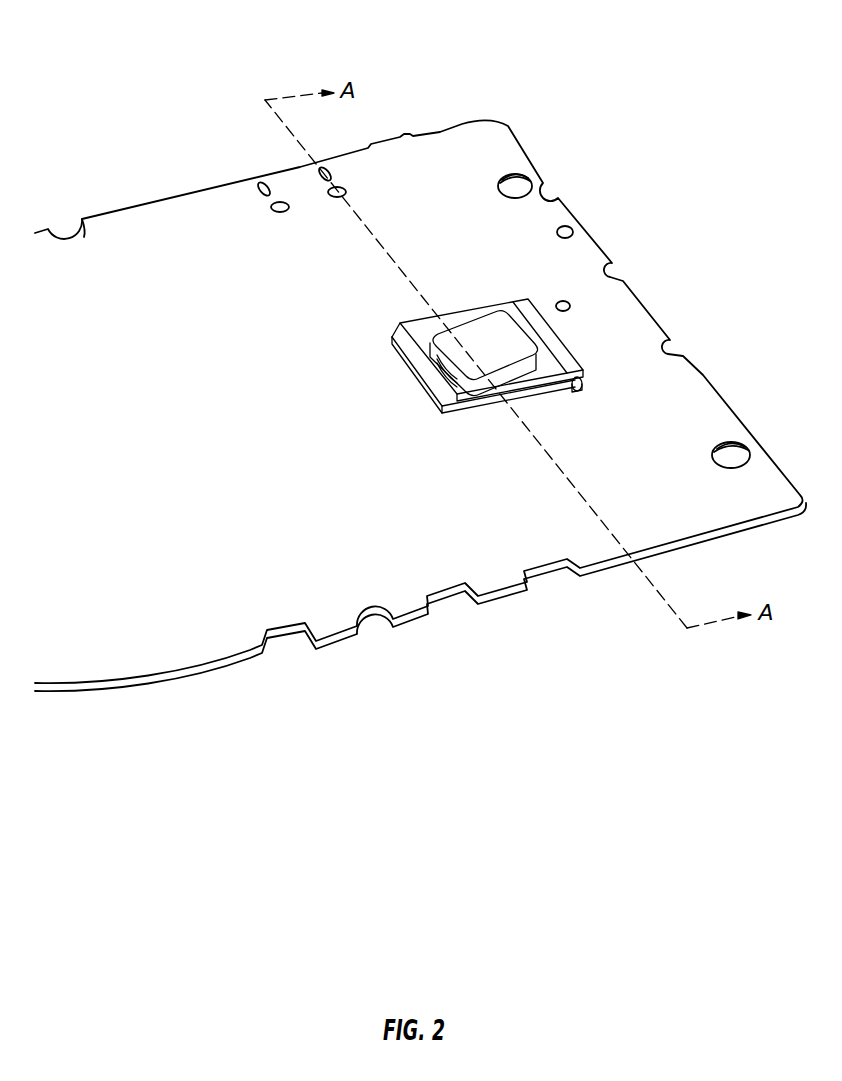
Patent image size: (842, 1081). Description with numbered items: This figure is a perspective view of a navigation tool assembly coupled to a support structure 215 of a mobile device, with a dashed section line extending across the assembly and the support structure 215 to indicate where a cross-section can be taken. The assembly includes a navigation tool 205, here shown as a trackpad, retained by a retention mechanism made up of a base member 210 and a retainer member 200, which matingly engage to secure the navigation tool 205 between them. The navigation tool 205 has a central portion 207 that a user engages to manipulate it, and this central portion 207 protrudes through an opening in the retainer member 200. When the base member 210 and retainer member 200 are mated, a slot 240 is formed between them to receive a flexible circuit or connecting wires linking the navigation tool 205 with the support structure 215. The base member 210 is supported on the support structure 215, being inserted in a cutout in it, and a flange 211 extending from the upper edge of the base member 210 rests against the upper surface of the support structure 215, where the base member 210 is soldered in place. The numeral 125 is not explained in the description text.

The sensor module 125 is at (527, 359).
The retainer member 200 is at (527, 359).
The navigation tool 205 is at (490, 338).
The central portion 207 is at (430, 383).
The base member 210 is at (497, 388).
The flange 211 is at (500, 297).
The support structure 215 is at (688, 428).
The slot 240 is at (548, 392).